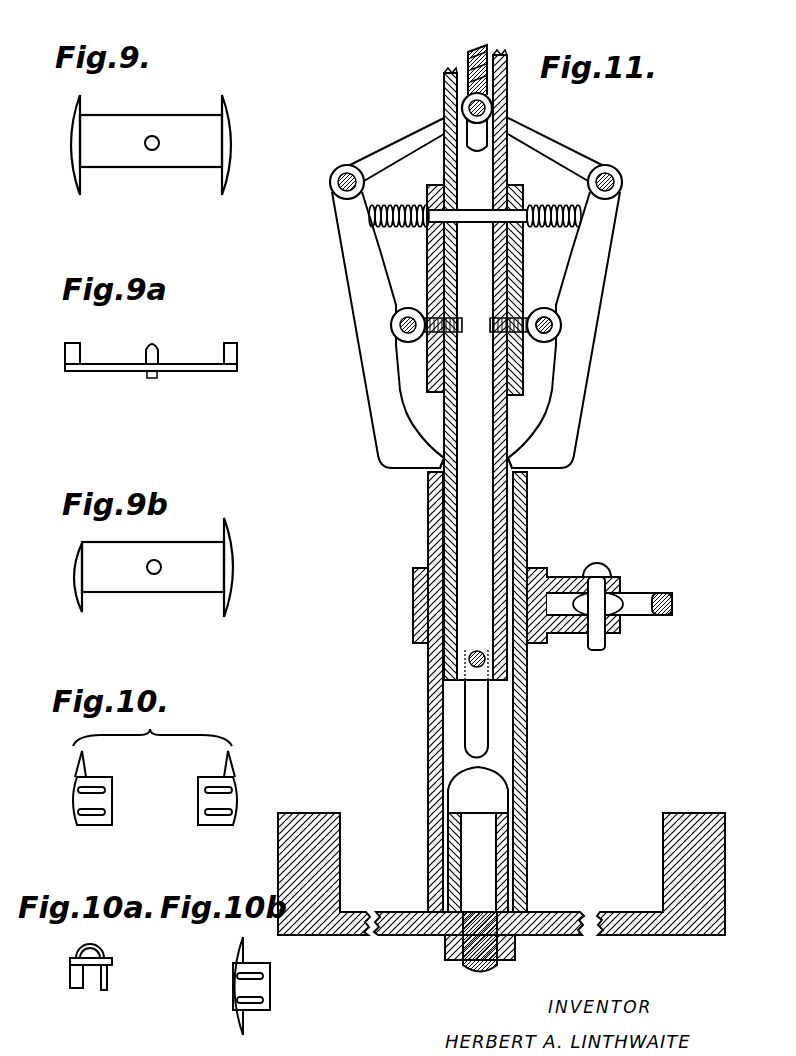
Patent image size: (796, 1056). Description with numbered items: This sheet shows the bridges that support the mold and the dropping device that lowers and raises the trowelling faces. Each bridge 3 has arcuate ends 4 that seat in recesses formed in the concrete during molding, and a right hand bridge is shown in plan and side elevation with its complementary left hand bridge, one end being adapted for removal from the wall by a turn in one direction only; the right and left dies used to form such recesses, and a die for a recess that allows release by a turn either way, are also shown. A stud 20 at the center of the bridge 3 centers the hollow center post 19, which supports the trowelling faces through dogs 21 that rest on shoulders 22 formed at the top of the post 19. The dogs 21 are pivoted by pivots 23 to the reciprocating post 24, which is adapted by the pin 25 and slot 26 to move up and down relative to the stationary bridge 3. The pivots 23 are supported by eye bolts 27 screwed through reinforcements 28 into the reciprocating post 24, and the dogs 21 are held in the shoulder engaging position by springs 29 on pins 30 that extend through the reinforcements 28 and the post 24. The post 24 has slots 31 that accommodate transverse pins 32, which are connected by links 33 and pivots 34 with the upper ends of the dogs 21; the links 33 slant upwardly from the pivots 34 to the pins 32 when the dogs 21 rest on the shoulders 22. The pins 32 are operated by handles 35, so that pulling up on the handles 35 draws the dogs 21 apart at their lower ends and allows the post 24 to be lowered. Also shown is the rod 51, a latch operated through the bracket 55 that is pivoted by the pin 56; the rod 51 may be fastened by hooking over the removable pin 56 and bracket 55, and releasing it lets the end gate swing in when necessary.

In FIG. 9, the bridge 3 is at (167, 168).
In FIG. 9A, the bridge 3 is at (126, 372).
In FIG. 9B, the bridge 3 is at (193, 592).
In FIG. 11, the bridge 3 is at (562, 935).
In FIG. 9, the arcuate end 4 is at (66, 140).
In FIG. 9A, the arcuate end 4 is at (65, 351).
In FIG. 9B, the arcuate end 4 is at (70, 572).
In FIG. 11, the arcuate end 4 is at (278, 855).
In FIG. 9, the stud 20 is at (158, 138).
In FIG. 9A, the stud 20 is at (158, 348).
In FIG. 9B, the stud 20 is at (147, 567).
In FIG. 11, the stud 20 is at (447, 833).
In FIG. 11, the hollow center post 19 is at (530, 745).
In FIG. 11, the dog 21 is at (392, 440).
In FIG. 11, the shoulder 22 is at (440, 462).
In FIG. 11, the pivot 23 is at (562, 324).
In FIG. 11, the reciprocating post 24 is at (475, 367).
In FIG. 11, the pin 25 is at (470, 660).
In FIG. 11, the slot 26 is at (470, 712).
In FIG. 11, the eye bolt 27 is at (546, 312).
In FIG. 11, the reinforcement 28 is at (526, 285).
In FIG. 11, the spring 29 is at (396, 208).
In FIG. 11, the pin 30 is at (481, 222).
In FIG. 11, the slot 31 is at (458, 86).
In FIG. 11, the transverse pin 32 is at (468, 110).
In FIG. 11, the link 33 is at (402, 152).
In FIG. 11, the pivot 34 is at (338, 181).
In FIG. 11, the handle 35 is at (466, 57).
In FIG. 11, the rod 51 is at (665, 619).
In FIG. 11, the bracket 55 is at (620, 587).
In FIG. 11, the pin 56 is at (597, 564).